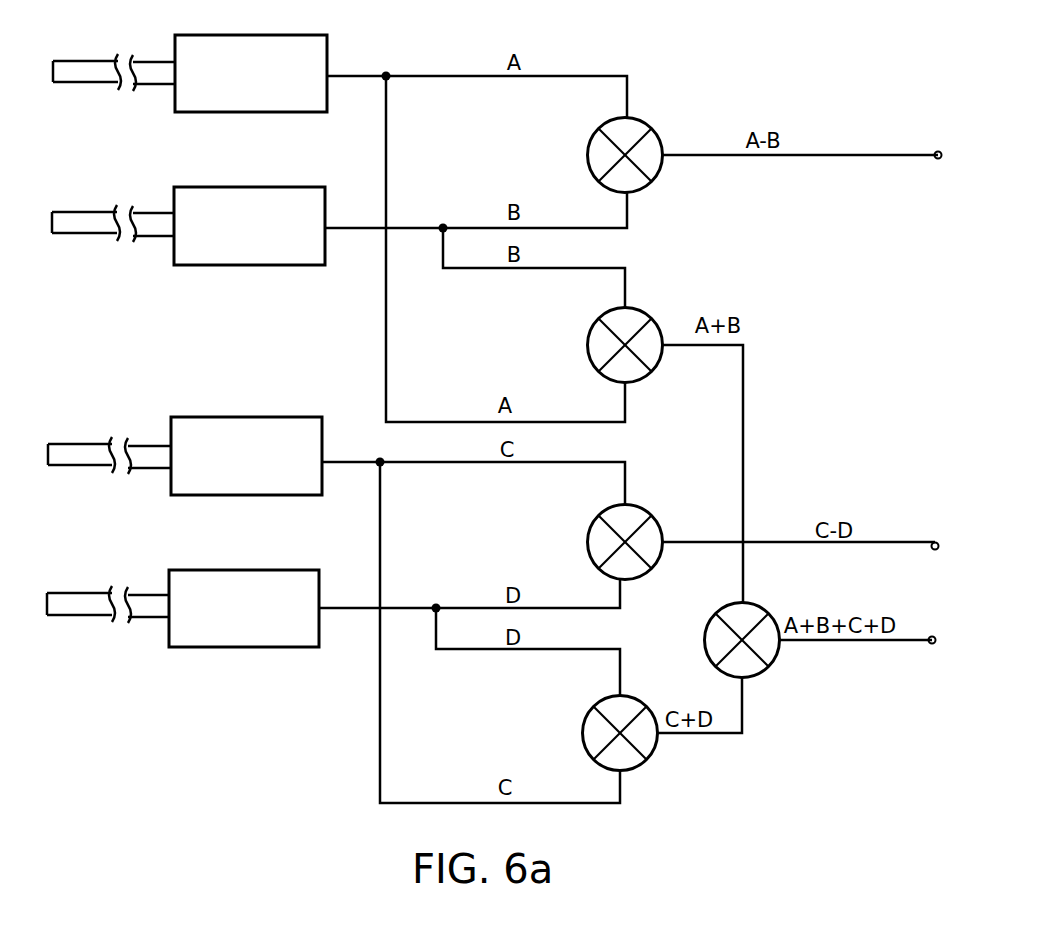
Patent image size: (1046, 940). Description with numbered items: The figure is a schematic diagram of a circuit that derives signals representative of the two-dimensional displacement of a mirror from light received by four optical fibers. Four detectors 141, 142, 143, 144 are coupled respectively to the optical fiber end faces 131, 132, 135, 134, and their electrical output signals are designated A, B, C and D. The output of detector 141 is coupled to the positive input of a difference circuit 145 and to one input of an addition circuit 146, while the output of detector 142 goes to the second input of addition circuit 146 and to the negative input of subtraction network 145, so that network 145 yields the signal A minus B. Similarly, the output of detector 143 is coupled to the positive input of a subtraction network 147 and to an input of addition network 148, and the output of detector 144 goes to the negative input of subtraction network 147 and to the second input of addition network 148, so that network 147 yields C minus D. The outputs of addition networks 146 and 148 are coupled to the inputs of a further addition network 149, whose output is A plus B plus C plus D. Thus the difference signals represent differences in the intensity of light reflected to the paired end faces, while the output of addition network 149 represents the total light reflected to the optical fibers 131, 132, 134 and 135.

The end face 131 is at (54, 70).
The end face 132 is at (53, 221).
The end face 134 is at (49, 602).
The end face 135 is at (49, 452).
The detector 141 is at (250, 35).
The detector 142 is at (247, 187).
The detector 143 is at (243, 417).
The detector 144 is at (245, 570).
The difference circuit 145 is at (655, 120).
The addition circuit 146 is at (648, 316).
The subtraction network 147 is at (652, 514).
The addition network 148 is at (636, 698).
The addition network 149 is at (720, 607).